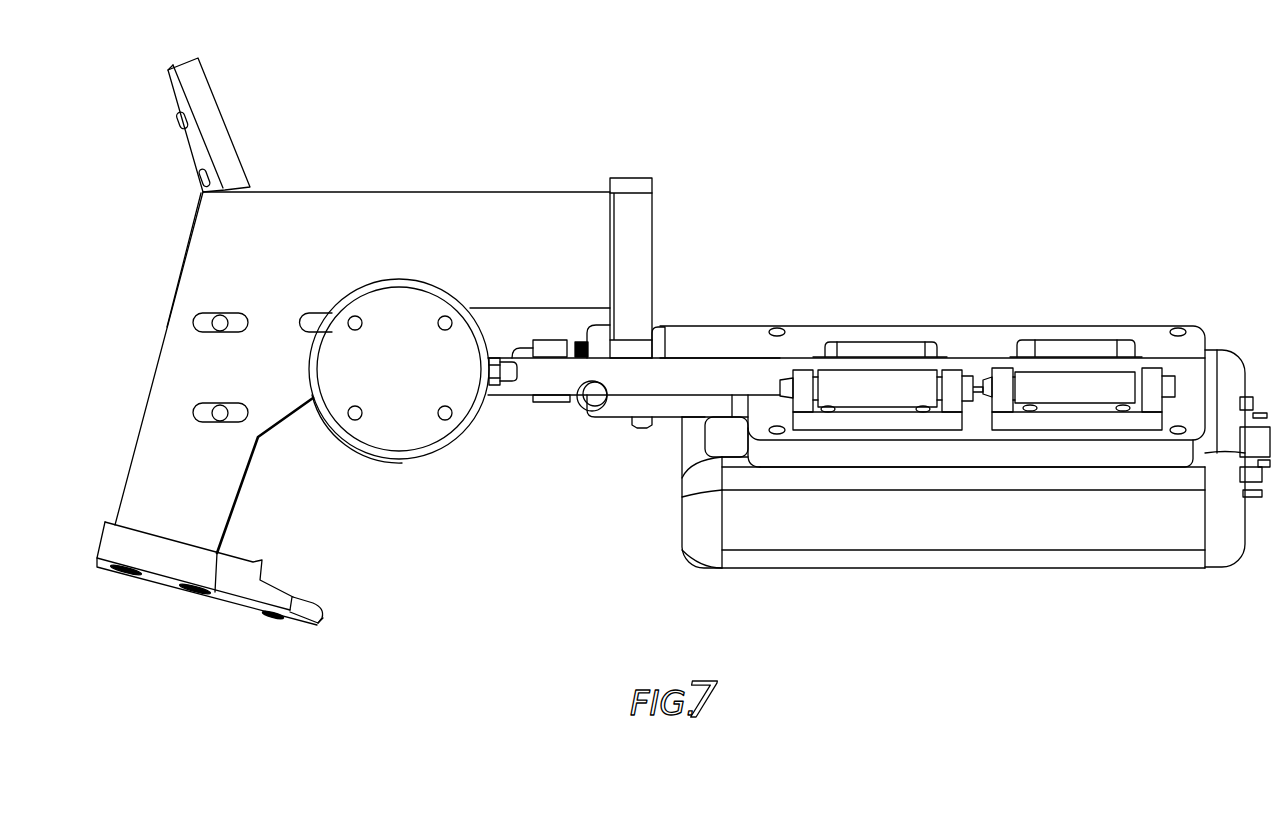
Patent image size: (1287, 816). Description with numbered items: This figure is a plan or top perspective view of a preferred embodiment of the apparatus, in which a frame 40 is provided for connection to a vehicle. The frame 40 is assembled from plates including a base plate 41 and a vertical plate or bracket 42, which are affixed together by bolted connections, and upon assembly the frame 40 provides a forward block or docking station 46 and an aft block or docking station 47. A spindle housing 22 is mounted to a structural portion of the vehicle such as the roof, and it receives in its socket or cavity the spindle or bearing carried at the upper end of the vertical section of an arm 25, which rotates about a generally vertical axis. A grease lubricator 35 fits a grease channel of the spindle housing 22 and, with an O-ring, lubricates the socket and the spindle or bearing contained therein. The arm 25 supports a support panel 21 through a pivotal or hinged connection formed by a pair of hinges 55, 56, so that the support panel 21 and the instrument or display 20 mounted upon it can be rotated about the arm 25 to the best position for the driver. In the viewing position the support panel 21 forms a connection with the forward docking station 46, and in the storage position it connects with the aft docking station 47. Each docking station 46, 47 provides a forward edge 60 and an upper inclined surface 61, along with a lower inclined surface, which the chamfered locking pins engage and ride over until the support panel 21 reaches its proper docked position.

The instrument or display 20 is at (906, 560).
The support panel 21 is at (1195, 328).
The spindle housing 22 is at (399, 371).
The arm 25 is at (722, 370).
The grease lubricator 35 is at (512, 382).
The frame 40 is at (343, 192).
The base plate 41 is at (500, 227).
The vertical plate or bracket 42 is at (210, 112).
The forward block or docking station 46 is at (640, 266).
The aft block or docking station 47 is at (243, 563).
The hinge 55 is at (1078, 385).
The hinge 56 is at (888, 392).
The forward edge 60 is at (645, 430).
The upper inclined surface 61 is at (308, 600).